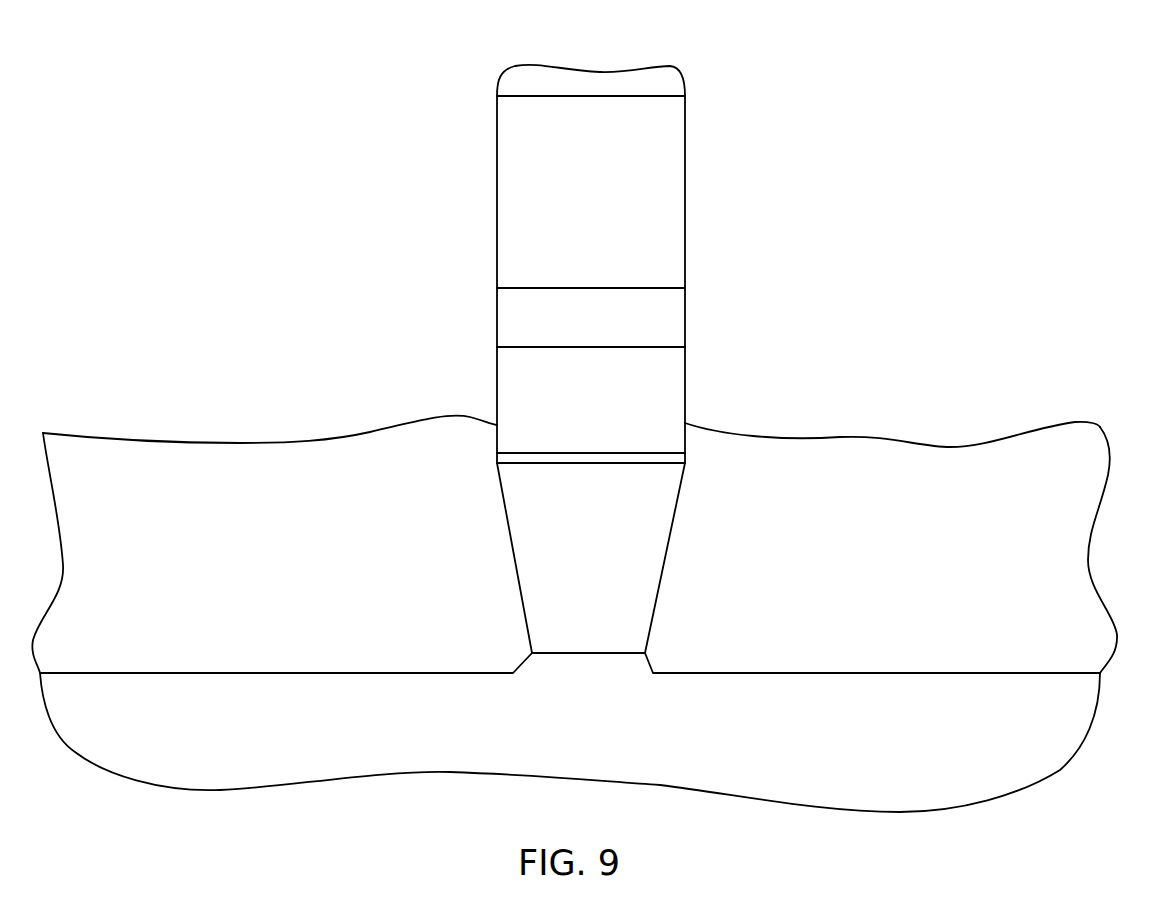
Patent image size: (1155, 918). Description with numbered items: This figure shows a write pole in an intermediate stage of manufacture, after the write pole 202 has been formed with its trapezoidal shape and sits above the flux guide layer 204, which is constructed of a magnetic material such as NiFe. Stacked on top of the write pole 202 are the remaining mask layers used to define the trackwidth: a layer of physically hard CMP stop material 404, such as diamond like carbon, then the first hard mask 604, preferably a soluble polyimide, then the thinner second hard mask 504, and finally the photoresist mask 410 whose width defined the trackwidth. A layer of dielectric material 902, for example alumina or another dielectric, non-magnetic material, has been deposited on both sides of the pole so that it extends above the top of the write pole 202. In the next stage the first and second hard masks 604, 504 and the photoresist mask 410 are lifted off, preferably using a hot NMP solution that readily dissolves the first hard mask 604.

The write pole 202 is at (647, 522).
The flux guide layer 204 is at (673, 742).
The CMP stop material 404 is at (679, 459).
The photoresist mask 410 is at (647, 222).
The second hard mask 504 is at (665, 317).
The first hard mask 604 is at (647, 387).
The dielectric material 902 is at (628, 77).